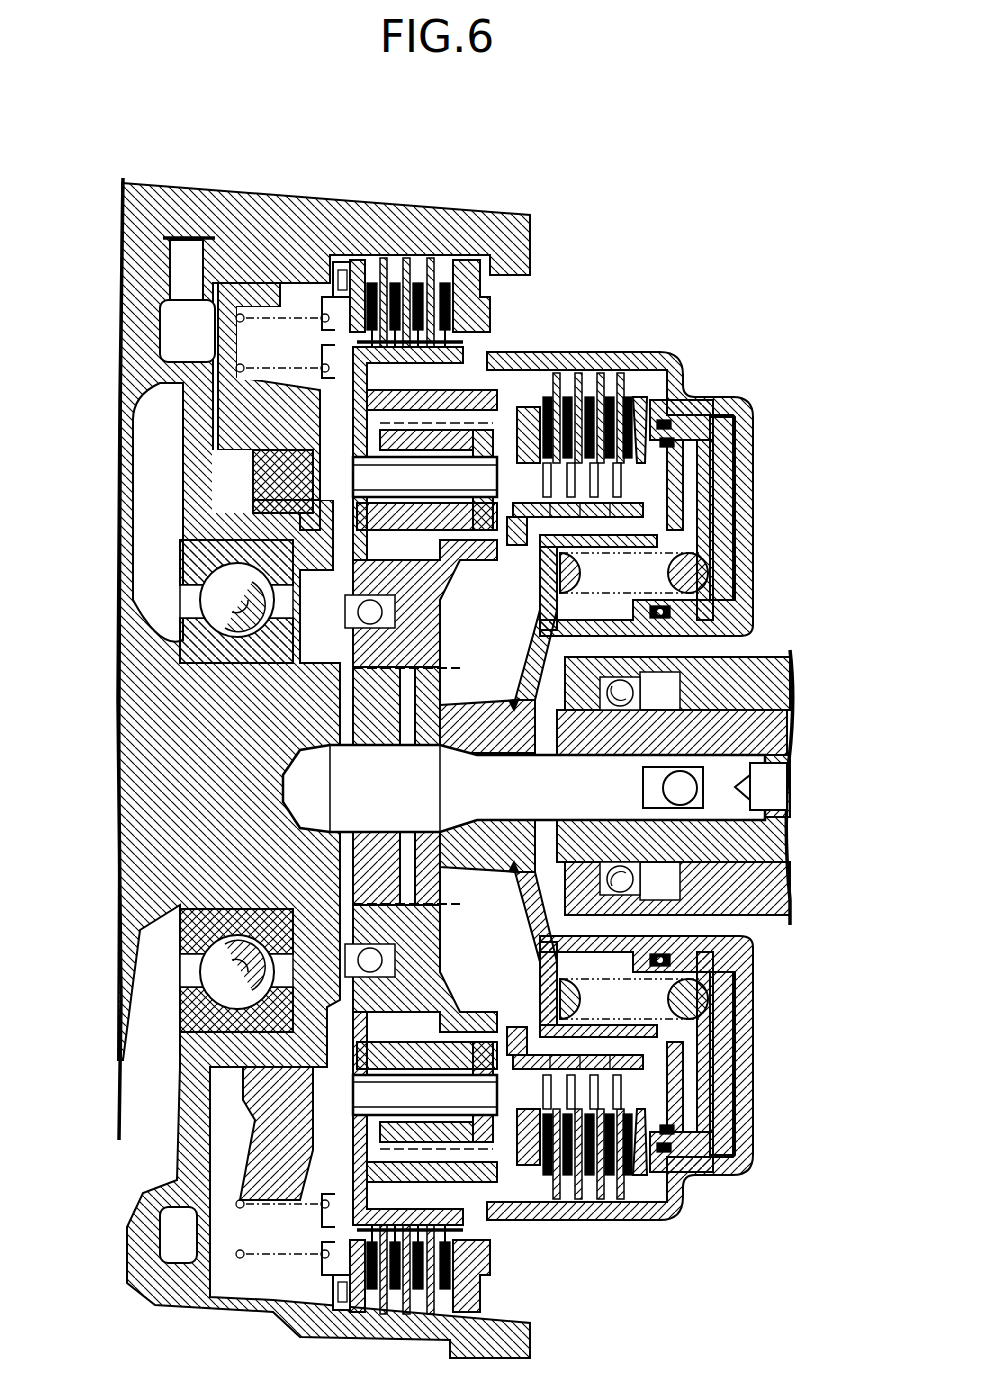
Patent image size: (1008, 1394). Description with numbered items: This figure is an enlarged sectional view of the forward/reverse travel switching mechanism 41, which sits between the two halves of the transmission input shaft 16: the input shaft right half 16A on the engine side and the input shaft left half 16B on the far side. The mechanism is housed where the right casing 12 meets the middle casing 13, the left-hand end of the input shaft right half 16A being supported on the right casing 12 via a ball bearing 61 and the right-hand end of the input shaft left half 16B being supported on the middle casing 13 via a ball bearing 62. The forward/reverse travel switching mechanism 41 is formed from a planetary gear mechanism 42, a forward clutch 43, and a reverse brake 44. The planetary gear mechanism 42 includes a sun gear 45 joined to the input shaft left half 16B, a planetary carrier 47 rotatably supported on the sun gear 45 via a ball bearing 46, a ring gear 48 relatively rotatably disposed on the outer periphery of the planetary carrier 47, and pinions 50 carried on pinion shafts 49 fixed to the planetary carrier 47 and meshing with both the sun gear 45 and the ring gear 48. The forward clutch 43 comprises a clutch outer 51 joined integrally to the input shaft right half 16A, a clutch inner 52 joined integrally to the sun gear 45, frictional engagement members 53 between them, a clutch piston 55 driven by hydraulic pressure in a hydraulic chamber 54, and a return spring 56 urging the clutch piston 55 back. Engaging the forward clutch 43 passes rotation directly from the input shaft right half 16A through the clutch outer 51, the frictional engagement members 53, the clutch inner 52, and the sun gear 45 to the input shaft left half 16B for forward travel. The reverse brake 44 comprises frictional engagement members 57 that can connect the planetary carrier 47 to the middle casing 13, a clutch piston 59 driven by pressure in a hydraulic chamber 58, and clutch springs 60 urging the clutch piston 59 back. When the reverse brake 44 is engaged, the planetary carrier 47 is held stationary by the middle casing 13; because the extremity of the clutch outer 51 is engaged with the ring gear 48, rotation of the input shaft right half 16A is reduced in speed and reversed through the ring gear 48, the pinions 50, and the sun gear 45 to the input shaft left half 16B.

The right casing 12 is at (792, 682).
The middle casing 13 is at (190, 413).
The input shaft 16 is at (751, 662).
The input shaft right half 16A is at (772, 748).
The input shaft left half 16B is at (130, 680).
The forward/reverse travel switching mechanism 41 is at (648, 335).
The planetary gear mechanism 42 is at (352, 430).
The forward clutch 43 is at (650, 388).
The reverse brake 44 is at (490, 295).
The sun gear 45 is at (445, 560).
The ball bearing 46 is at (352, 665).
The planetary carrier 47 is at (352, 530).
The ring gear 48 is at (446, 420).
The pinion shafts 49 is at (440, 492).
The pinions 50 is at (470, 540).
The clutch outer 51 is at (748, 440).
The clutch inner 52 is at (643, 520).
The frictional engagement members 53 is at (621, 375).
The hydraulic chamber 54 is at (755, 548).
The clutch piston 55 is at (722, 470).
The return spring 56 is at (645, 612).
The frictional engagement members 57 is at (442, 262).
The hydraulic chamber 58 is at (172, 351).
The clutch piston 59 is at (262, 390).
The clutch springs 60 is at (325, 323).
The ball bearing 61 is at (620, 712).
The ball bearing 62 is at (203, 605).